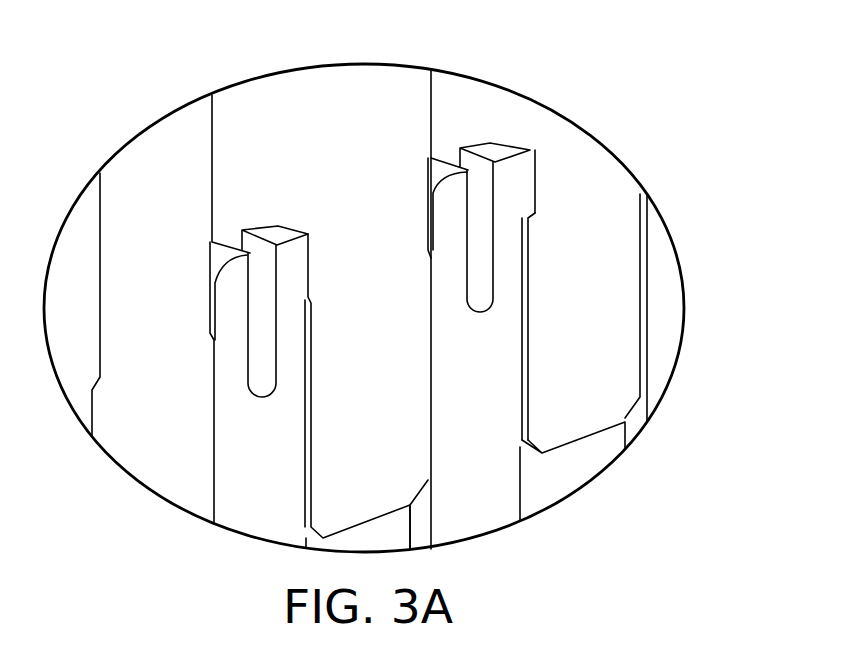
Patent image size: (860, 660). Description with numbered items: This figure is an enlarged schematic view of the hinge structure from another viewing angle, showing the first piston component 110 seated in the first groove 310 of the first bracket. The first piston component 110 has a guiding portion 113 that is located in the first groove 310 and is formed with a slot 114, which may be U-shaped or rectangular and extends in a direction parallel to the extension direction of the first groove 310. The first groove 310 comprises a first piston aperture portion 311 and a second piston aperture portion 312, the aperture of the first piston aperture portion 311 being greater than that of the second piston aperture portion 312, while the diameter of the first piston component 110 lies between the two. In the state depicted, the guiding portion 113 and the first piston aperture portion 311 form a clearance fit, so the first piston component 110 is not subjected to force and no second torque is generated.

The first piston component 110 is at (451, 280).
The guiding portion 113 is at (488, 372).
The slot 114 is at (482, 210).
The first groove 310 is at (518, 232).
The first piston aperture portion 311 is at (526, 142).
The second piston aperture portion 312 is at (517, 262).